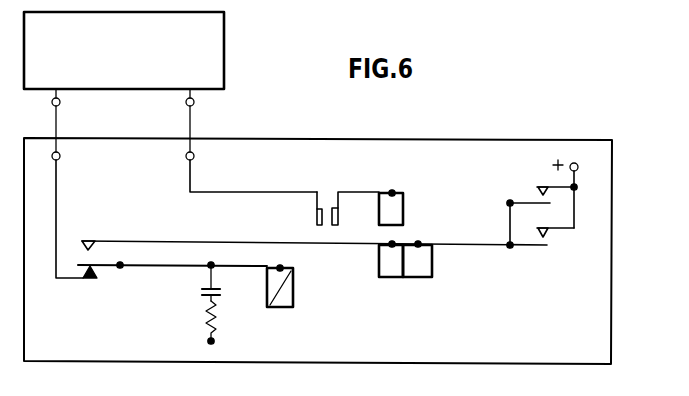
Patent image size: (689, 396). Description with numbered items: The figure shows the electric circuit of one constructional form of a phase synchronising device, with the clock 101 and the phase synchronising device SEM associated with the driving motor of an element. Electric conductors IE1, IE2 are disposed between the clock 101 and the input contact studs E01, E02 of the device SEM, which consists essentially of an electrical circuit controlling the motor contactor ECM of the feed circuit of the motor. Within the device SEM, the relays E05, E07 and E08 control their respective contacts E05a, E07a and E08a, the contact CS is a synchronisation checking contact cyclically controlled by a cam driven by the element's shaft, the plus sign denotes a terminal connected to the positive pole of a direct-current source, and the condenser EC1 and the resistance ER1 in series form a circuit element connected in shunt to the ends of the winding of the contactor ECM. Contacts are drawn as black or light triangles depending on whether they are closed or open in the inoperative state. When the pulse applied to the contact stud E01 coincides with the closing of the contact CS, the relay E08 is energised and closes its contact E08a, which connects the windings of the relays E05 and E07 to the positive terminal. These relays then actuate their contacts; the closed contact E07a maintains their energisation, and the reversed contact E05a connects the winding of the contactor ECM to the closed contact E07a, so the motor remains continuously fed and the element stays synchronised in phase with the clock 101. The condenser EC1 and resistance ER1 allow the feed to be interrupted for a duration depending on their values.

The clock 101 is at (216, 62).
The electric conductor IE1 is at (191, 121).
The electric conductor IE2 is at (56, 117).
The input contact stud E01 is at (192, 160).
The input contact stud E02 is at (59, 159).
The synchronisation checking contact CS is at (348, 200).
The relay E08 is at (407, 207).
The relay E05 is at (389, 268).
The contact E05a is at (314, 234).
The relay E07 is at (432, 275).
The contact E07a is at (515, 215).
The contact E08a is at (560, 210).
The motor contactor ECM is at (293, 305).
The condenser EC1 is at (201, 291).
The resistance ER1 is at (202, 323).
The phase synchronising device SEM is at (67, 351).